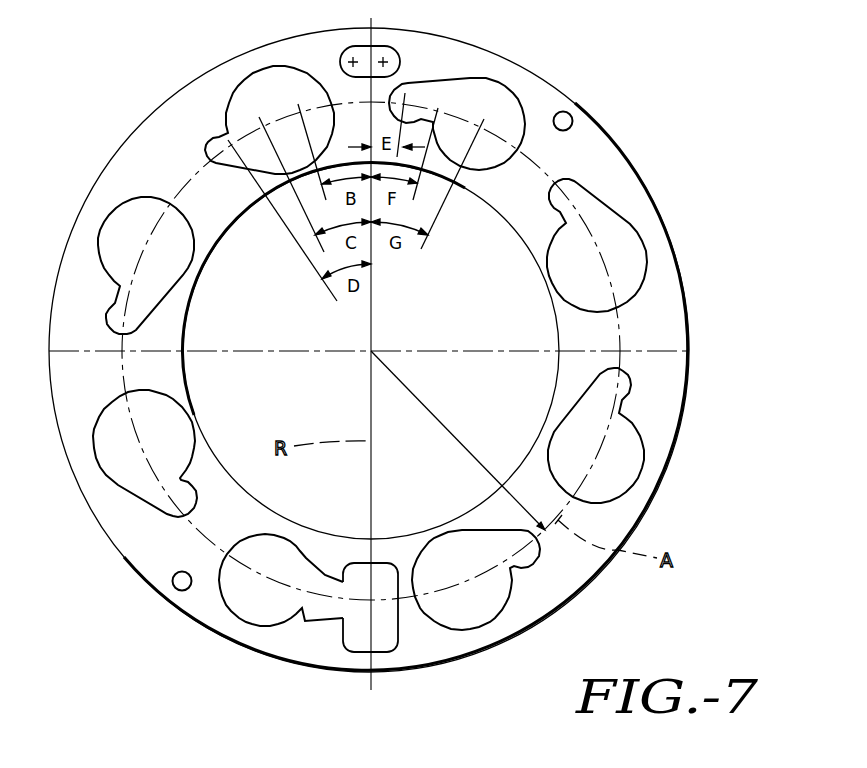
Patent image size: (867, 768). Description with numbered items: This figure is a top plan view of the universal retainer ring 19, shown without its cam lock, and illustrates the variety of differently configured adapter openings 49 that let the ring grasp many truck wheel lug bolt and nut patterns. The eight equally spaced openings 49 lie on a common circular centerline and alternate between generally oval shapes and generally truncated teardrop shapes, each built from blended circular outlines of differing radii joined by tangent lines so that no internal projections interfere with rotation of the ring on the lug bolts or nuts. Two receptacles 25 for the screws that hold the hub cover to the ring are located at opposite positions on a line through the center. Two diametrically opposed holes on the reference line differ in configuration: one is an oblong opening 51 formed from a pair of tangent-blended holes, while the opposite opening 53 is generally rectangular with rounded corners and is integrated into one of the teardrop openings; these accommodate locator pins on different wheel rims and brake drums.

The retainer ring 19 is at (688, 322).
The receptacles 25 is at (566, 119).
The adapter openings 49 is at (468, 600).
The slot 51 is at (396, 58).
The rectangular opening 53 is at (388, 642).